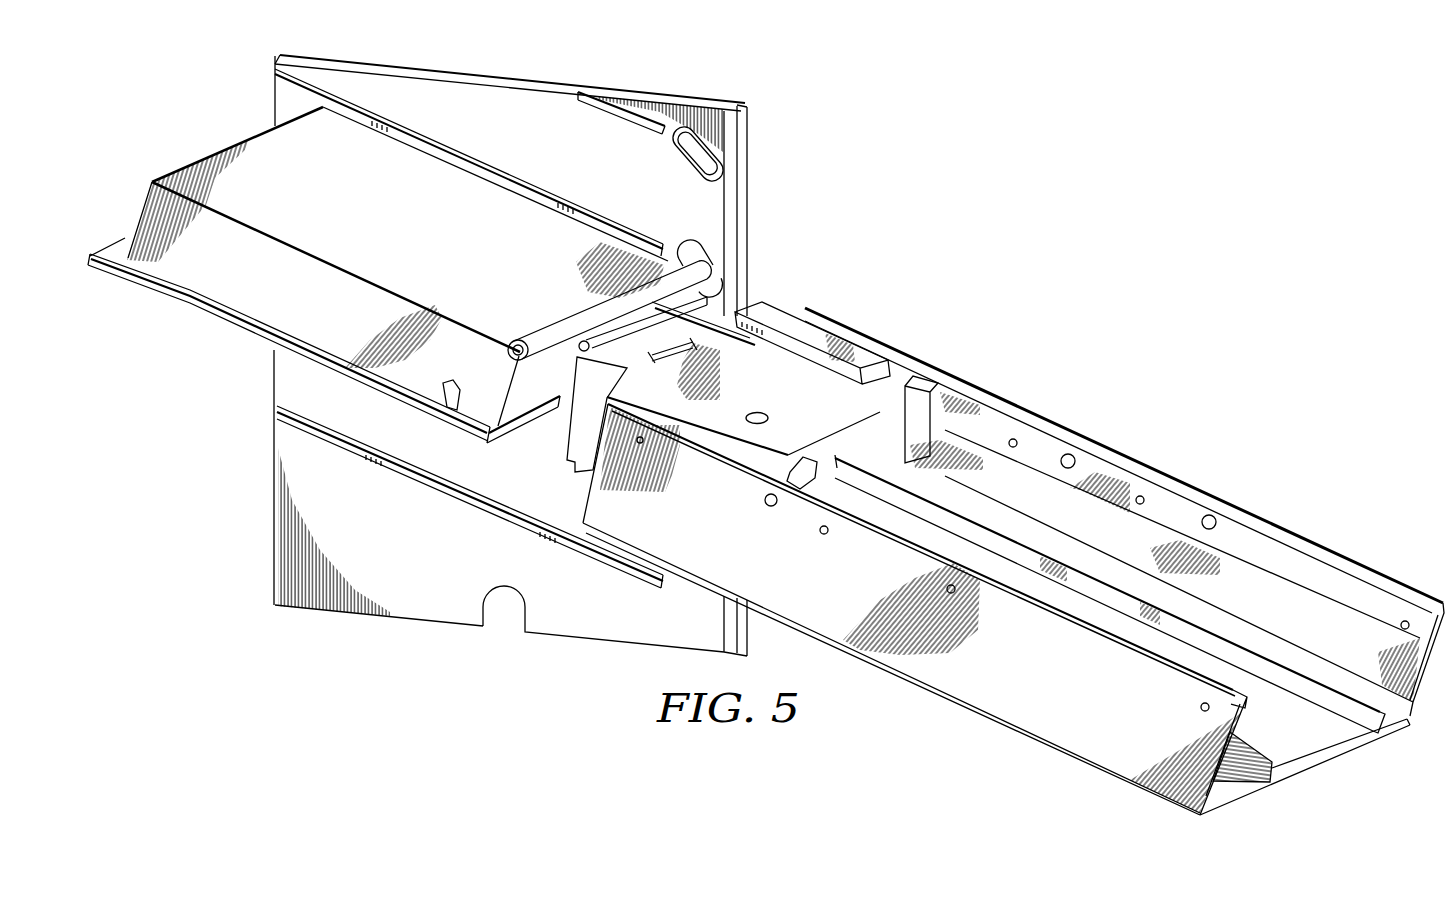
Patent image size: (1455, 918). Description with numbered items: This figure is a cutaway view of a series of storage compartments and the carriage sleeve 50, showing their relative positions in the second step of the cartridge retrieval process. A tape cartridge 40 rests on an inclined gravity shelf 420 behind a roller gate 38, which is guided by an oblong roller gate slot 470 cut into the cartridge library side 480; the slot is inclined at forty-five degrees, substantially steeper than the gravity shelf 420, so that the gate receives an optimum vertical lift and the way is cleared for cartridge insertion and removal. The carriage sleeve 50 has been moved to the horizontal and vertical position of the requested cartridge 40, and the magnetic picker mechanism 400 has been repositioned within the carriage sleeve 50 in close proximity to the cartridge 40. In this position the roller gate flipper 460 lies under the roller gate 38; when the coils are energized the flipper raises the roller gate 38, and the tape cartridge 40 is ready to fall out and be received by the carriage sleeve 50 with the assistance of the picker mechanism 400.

The roller gate 38 is at (708, 265).
The tape cartridge 40 is at (241, 298).
The carriage sleeve 50 is at (1000, 708).
The magnetic picker mechanism 400 is at (818, 312).
The gravity shelf 420 is at (150, 286).
The roller gate flipper 460 is at (617, 338).
The roller gate slot 470 is at (703, 157).
The cartridge library side 480 is at (504, 84).